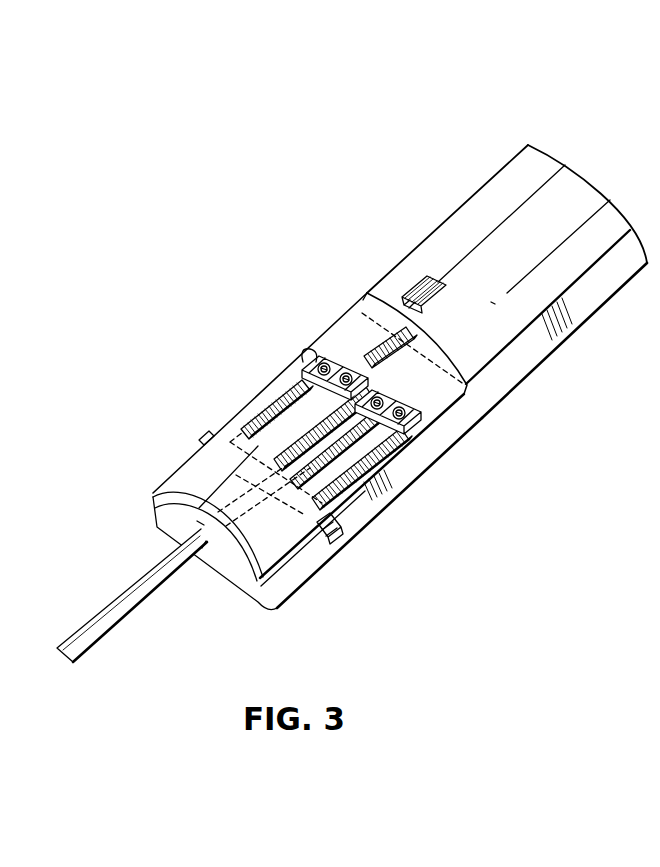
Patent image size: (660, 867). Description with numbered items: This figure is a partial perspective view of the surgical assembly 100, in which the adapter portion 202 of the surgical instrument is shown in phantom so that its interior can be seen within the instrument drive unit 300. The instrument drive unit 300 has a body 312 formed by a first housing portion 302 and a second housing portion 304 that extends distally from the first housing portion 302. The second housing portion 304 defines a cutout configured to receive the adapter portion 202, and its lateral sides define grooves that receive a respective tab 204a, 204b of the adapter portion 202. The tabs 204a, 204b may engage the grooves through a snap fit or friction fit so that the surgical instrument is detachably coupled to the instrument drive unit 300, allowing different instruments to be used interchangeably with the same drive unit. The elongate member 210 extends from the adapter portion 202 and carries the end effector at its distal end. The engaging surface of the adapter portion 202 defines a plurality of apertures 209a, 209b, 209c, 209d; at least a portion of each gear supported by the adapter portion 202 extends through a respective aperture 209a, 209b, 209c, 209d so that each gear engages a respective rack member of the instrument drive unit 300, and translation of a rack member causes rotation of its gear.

The surgical assembly 100 is at (307, 302).
The adapter portion 202 is at (184, 482).
The tab 204a is at (203, 431).
The tab 204b is at (335, 552).
The aperture 209a is at (307, 387).
The aperture 209b is at (310, 393).
The aperture 209c is at (378, 540).
The aperture 209d is at (357, 420).
The elongate member 210 is at (137, 598).
The instrument drive unit 300 is at (493, 148).
The first housing portion 302 is at (607, 288).
The second housing portion 304 is at (430, 457).
The body 312 is at (577, 188).